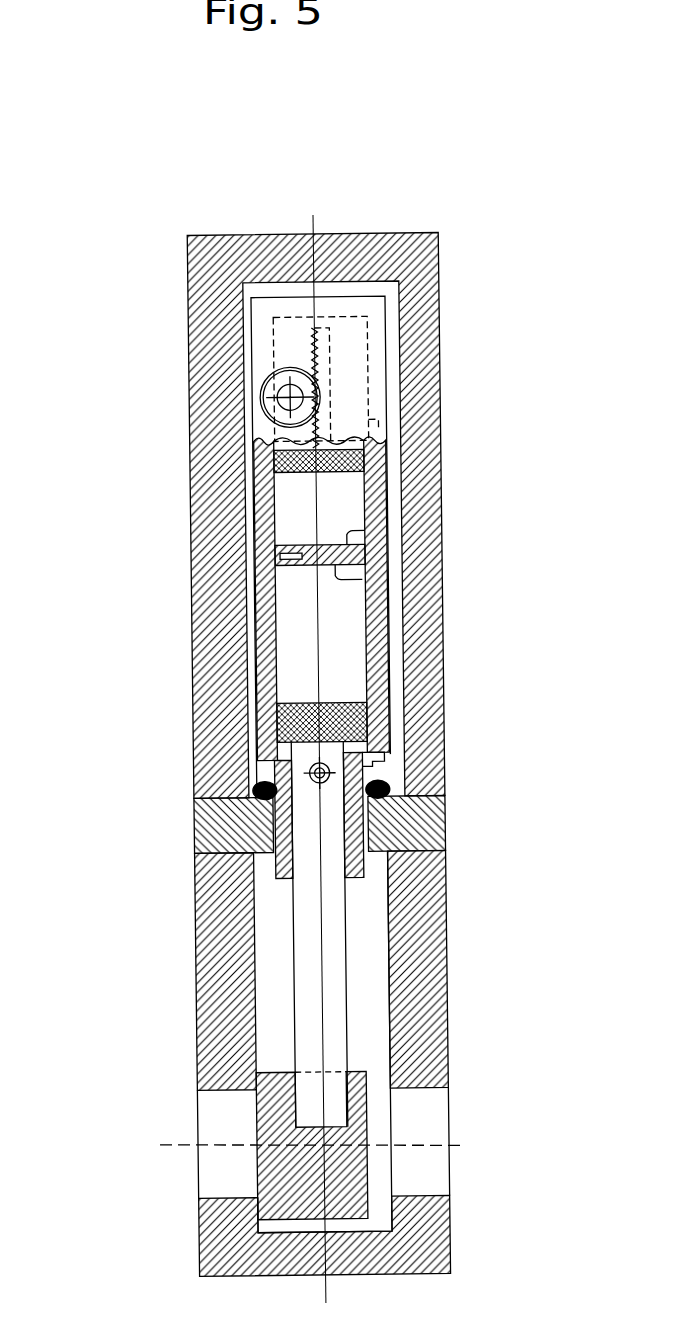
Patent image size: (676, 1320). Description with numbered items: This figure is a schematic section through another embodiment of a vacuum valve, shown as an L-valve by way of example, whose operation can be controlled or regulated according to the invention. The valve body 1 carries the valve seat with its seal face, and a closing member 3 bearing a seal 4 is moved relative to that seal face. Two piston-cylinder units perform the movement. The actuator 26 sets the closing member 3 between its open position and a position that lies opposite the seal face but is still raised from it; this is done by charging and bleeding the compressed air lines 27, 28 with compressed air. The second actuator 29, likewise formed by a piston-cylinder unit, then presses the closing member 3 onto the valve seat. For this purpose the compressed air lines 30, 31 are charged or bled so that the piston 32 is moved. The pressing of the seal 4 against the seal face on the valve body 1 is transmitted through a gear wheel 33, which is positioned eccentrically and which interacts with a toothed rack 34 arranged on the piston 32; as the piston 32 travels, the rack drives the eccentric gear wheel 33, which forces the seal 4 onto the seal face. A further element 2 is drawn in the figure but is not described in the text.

The valve body 1 is at (411, 958).
The transverse bore 2 is at (224, 1119).
The closing member 3 is at (362, 1169).
The seal 4 is at (248, 1076).
The actuator 26 is at (382, 696).
The compressed air line 27 is at (368, 561).
The compressed air line 28 is at (371, 771).
The actuator 29 is at (391, 414).
The compressed air line 30 is at (269, 552).
The compressed air line 31 is at (374, 428).
The piston 32 is at (272, 462).
The gear wheel 33 is at (265, 382).
The toothed rack 34 is at (320, 355).